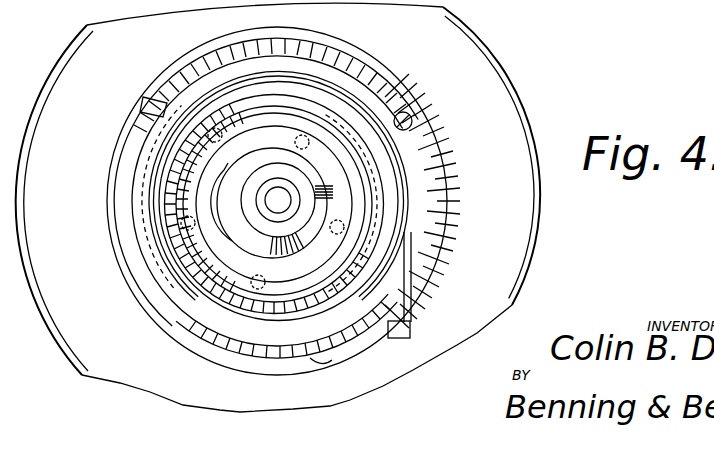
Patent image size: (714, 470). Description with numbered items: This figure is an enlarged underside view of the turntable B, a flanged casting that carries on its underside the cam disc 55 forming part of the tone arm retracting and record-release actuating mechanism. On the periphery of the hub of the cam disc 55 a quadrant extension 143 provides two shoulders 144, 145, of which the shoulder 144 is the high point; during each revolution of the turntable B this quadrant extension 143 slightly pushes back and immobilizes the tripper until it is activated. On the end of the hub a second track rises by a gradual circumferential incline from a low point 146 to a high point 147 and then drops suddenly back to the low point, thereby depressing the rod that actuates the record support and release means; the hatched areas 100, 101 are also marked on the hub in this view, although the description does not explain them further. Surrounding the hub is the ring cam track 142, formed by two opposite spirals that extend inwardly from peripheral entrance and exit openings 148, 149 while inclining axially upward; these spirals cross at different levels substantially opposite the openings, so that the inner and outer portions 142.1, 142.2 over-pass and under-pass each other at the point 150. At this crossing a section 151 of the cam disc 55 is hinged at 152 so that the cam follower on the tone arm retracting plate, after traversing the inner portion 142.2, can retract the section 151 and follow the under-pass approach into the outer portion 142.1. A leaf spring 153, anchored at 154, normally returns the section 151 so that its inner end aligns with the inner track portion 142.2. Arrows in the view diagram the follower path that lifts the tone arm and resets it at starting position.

The cam disc 55 is at (187, 265).
The ring member 100 is at (328, 170).
The hatched sector 101 is at (307, 237).
The ring cam track 142 is at (392, 205).
The outer portion of cam track 142.1 is at (378, 186).
The inner portion of cam track 142.2 is at (400, 177).
The quadrant extension 143 is at (212, 210).
The shoulder 144 is at (228, 162).
The shoulder 145 is at (256, 258).
The low point 146 is at (288, 262).
The high point 147 is at (322, 198).
The peripheral entrance opening 148 is at (325, 363).
The peripheral exit opening 149 is at (412, 303).
The over- and under-pass point 150 is at (290, 34).
The hinged section of cam disc 151 is at (187, 70).
The hinge 152 is at (148, 103).
The leaf spring 153 is at (350, 42).
The anchor 154 is at (410, 114).
The turntable B is at (440, 201).